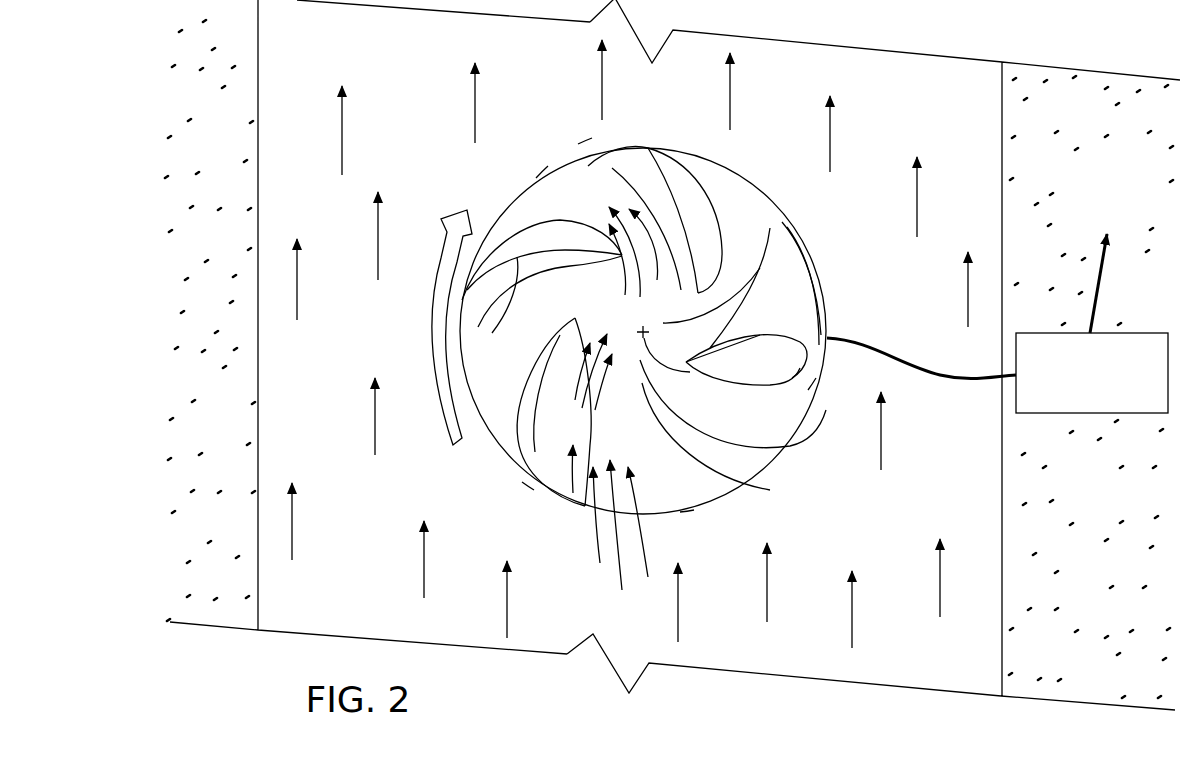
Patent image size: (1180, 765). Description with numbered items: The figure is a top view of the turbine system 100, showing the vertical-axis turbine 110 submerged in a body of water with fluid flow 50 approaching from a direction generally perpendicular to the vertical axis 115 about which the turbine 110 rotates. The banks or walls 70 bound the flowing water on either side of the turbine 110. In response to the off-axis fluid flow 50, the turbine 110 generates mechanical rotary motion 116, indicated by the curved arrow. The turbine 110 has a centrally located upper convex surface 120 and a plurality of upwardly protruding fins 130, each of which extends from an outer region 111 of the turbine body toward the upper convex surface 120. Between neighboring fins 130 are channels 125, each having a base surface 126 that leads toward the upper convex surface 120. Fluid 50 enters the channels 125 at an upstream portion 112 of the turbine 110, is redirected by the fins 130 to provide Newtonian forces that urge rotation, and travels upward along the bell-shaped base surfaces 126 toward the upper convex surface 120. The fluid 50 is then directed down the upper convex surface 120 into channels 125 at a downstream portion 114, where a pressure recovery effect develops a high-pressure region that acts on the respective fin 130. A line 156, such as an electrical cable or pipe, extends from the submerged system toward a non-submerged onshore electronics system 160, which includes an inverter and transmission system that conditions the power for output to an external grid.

The fluid flow 50 is at (916, 96).
The channel walls / ground 70 is at (229, 154).
The turbine system 100 is at (829, 243).
The turbine 110 is at (537, 176).
The outer region 111 is at (528, 477).
The upstream portion 112 is at (687, 520).
The downstream portion 114 is at (580, 139).
The vertical axis 115 is at (813, 385).
The mechanical rotary motion 116 is at (415, 335).
The upper convex surface 120 is at (690, 345).
The channels 125 is at (546, 209).
The base surface 126 is at (585, 206).
The fins 130 is at (681, 182).
The line 156 is at (948, 372).
The electronics system 160 is at (1138, 412).